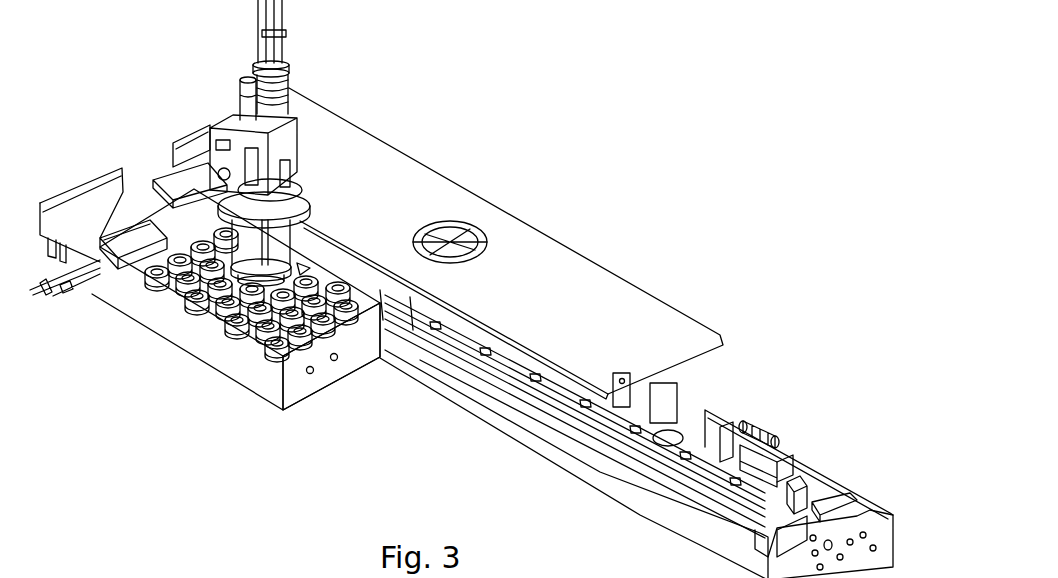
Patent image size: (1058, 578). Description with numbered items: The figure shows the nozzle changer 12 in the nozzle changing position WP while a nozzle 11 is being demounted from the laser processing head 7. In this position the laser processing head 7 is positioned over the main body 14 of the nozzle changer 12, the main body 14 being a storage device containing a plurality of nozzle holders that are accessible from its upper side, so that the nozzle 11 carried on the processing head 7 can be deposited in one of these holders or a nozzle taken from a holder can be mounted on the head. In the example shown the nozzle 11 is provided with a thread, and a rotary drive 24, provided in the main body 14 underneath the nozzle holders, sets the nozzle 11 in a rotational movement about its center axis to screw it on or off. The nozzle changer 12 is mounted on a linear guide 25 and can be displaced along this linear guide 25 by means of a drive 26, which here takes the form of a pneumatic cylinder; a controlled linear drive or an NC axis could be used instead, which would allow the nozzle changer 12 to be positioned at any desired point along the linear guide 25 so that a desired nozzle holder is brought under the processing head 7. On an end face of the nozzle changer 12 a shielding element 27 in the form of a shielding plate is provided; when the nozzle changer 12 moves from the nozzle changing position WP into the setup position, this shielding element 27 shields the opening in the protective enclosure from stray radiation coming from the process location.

The laser processing head 7 is at (300, 222).
The nozzle 11 is at (338, 250).
The nozzle changer 12 is at (160, 363).
The main body 14 is at (355, 335).
The rotary drive 24 is at (318, 382).
The linear guide 25 is at (607, 457).
The drive 26 is at (772, 495).
The shielding element 27 is at (75, 200).
The nozzle changing position WP is at (156, 153).